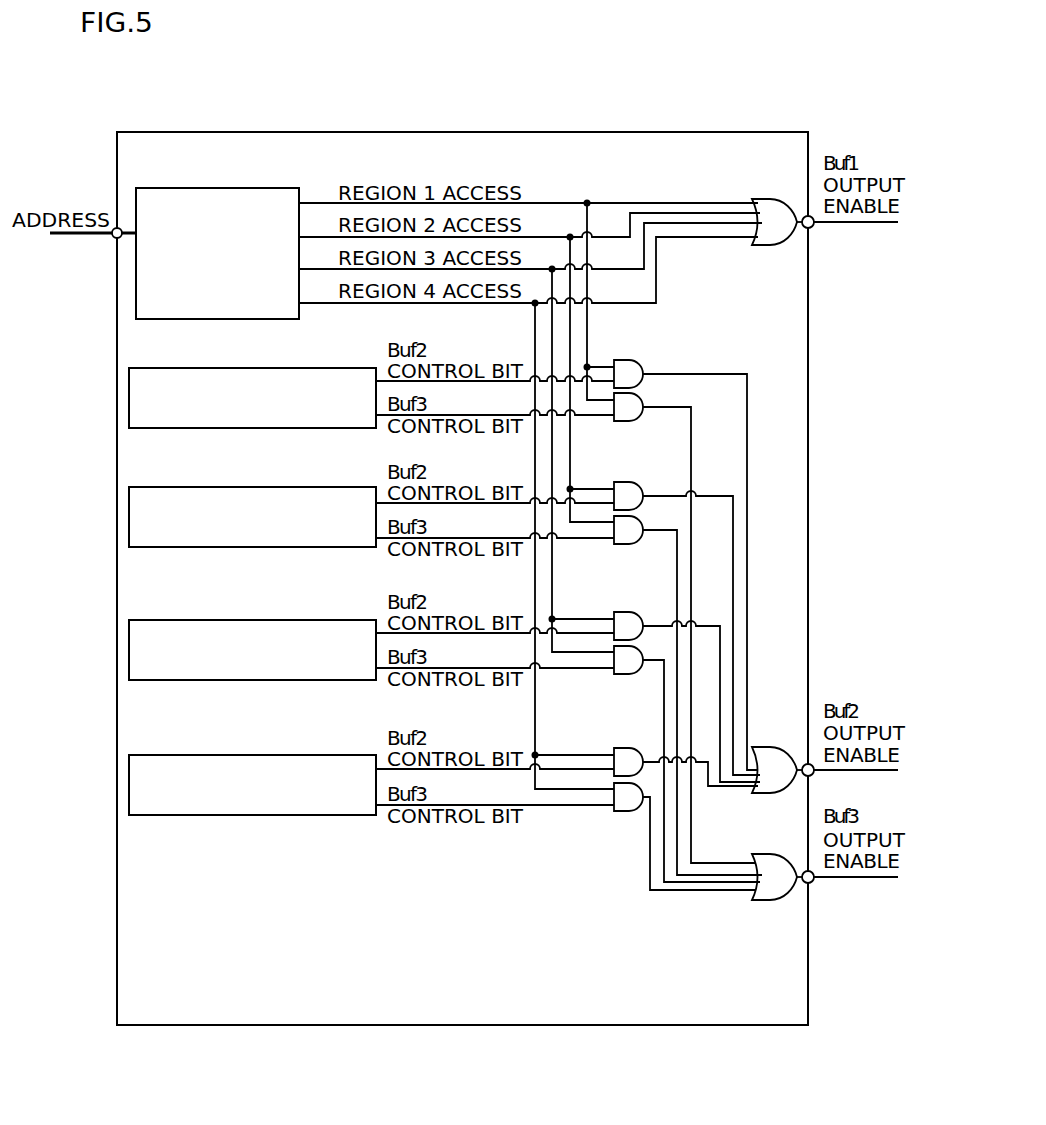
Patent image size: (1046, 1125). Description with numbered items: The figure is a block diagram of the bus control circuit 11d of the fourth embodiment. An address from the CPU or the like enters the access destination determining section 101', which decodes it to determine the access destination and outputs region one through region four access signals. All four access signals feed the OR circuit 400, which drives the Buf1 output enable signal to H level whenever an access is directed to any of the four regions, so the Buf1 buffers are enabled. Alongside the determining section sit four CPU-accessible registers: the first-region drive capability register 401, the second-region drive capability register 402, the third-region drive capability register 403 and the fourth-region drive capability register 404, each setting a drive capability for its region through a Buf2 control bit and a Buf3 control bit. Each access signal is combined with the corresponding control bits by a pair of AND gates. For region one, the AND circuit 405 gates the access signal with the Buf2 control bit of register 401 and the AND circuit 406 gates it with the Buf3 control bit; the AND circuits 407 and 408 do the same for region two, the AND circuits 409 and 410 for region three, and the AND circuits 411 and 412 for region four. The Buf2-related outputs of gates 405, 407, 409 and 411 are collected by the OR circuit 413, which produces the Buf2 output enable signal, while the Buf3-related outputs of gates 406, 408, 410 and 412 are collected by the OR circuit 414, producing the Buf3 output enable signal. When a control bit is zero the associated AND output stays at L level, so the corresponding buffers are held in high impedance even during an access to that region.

The bus control circuit 11d is at (236, 130).
The access destination determining section 101' is at (217, 229).
The OR circuit 400 is at (762, 198).
The region 1 drive capability register 401 is at (162, 367).
The region 2 drive capability register 402 is at (162, 486).
The region 3 drive capability register 403 is at (162, 619).
The region 4 drive capability register 404 is at (162, 754).
The AND circuit 405 is at (622, 360).
The AND circuit 406 is at (645, 398).
The AND circuit 407 is at (622, 481).
The AND circuit 408 is at (641, 521).
The AND circuit 409 is at (622, 612).
The AND circuit 410 is at (641, 654).
The AND circuit 411 is at (622, 747).
The AND circuit 412 is at (629, 814).
The OR circuit 413 is at (762, 746).
The OR circuit 414 is at (762, 853).